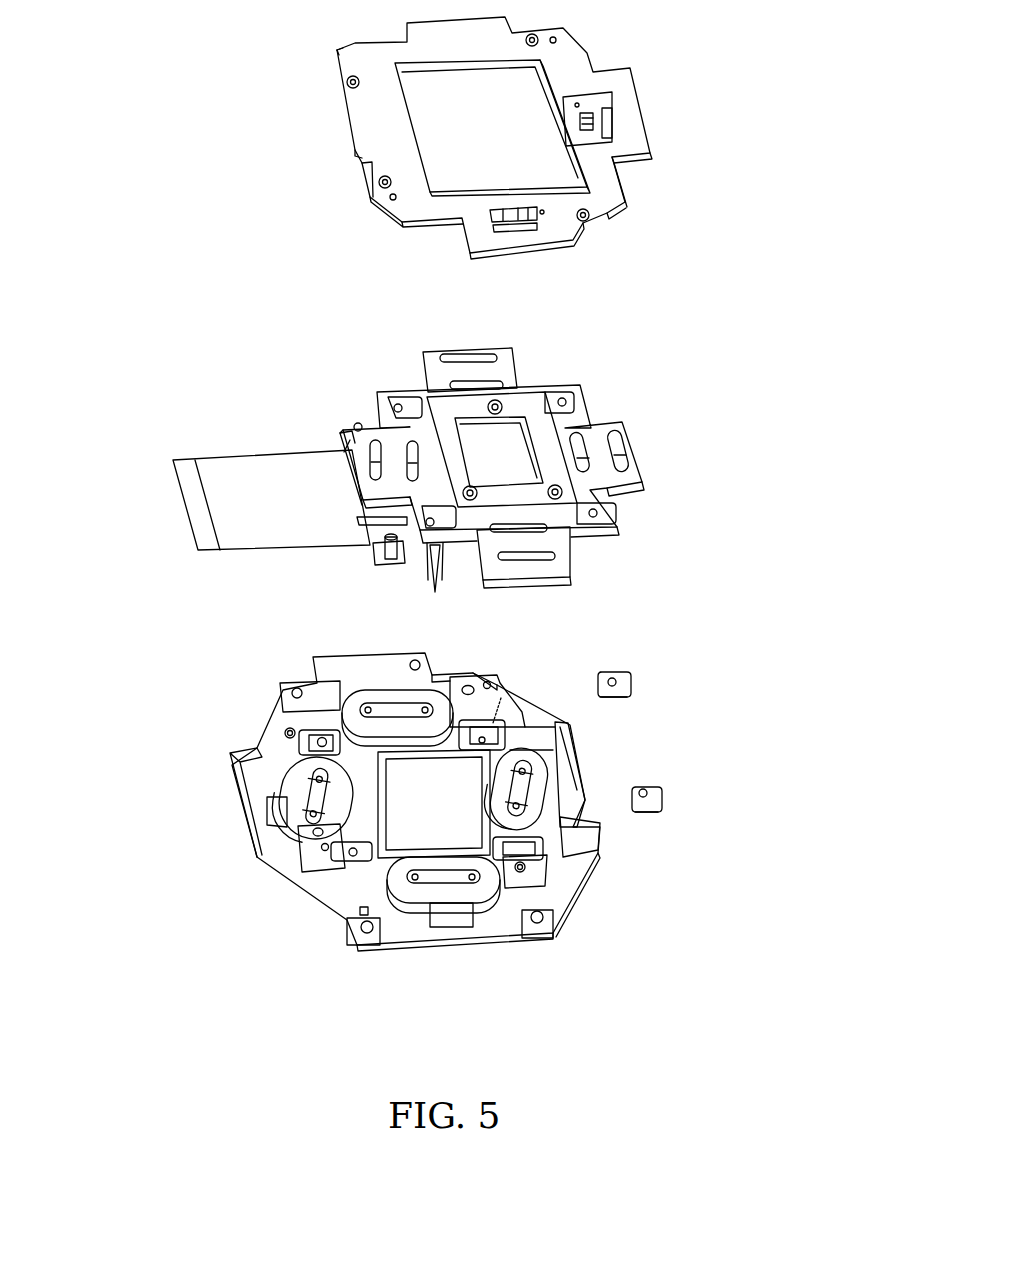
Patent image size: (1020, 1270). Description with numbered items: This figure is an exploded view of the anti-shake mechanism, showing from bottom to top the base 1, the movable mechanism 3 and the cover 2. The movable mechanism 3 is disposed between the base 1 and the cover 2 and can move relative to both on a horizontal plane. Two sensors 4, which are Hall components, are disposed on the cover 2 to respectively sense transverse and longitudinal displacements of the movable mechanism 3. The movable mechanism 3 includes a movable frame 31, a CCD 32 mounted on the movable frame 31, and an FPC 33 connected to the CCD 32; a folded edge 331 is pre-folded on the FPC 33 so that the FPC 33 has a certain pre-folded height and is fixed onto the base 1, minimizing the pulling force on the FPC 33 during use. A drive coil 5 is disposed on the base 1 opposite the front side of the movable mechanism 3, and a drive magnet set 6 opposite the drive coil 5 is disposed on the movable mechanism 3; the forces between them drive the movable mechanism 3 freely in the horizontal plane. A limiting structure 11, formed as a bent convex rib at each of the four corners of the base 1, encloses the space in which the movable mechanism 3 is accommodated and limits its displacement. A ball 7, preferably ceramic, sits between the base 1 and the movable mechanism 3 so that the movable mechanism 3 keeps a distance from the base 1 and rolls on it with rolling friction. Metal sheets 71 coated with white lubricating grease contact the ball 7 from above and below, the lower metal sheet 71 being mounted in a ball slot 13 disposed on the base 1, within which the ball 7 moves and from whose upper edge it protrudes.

The base 1 is at (485, 920).
The cover 2 is at (382, 128).
The movable mechanism 3 is at (429, 409).
The movable frame 31 is at (577, 425).
The CCD 32 is at (507, 453).
The FPC 33 is at (262, 487).
The folded edge 331 is at (430, 570).
The sensor 4 is at (607, 120).
The drive coil 5 is at (405, 695).
The drive magnet set 6 is at (583, 468).
The ball 7 is at (617, 680).
The metal sheet 71 is at (628, 683).
The limiting structure 11 is at (287, 713).
The ball slot 13 is at (488, 717).